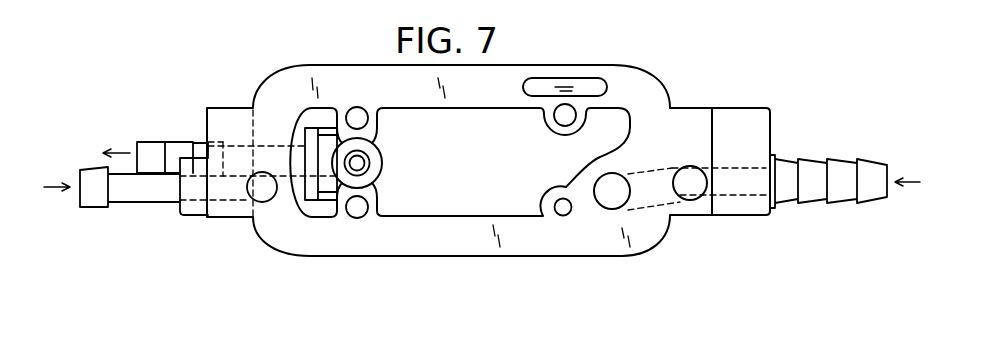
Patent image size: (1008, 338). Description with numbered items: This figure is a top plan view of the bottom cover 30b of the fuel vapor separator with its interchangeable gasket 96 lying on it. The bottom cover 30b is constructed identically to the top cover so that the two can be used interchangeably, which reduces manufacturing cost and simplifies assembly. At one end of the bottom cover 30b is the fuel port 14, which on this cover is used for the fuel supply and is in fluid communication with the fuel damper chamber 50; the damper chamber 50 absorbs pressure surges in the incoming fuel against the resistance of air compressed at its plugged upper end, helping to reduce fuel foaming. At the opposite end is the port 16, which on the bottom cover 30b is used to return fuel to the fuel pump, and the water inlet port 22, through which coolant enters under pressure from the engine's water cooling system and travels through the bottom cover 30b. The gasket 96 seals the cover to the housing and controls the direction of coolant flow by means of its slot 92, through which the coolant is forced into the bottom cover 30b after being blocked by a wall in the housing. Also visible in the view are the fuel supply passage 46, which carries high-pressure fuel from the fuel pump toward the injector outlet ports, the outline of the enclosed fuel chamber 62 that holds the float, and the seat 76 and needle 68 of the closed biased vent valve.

The fuel port 14 is at (873, 193).
The port 16 is at (152, 153).
The water inlet port 22 is at (93, 200).
The bottom cover 30b is at (462, 256).
The fuel supply passage 46 is at (690, 183).
The fuel damper chamber 50 is at (608, 197).
The enclosed fuel chamber 62 is at (509, 182).
The needle 68 is at (383, 162).
The seat 76 is at (380, 147).
The slot 92 is at (588, 85).
The gasket 96 is at (362, 236).